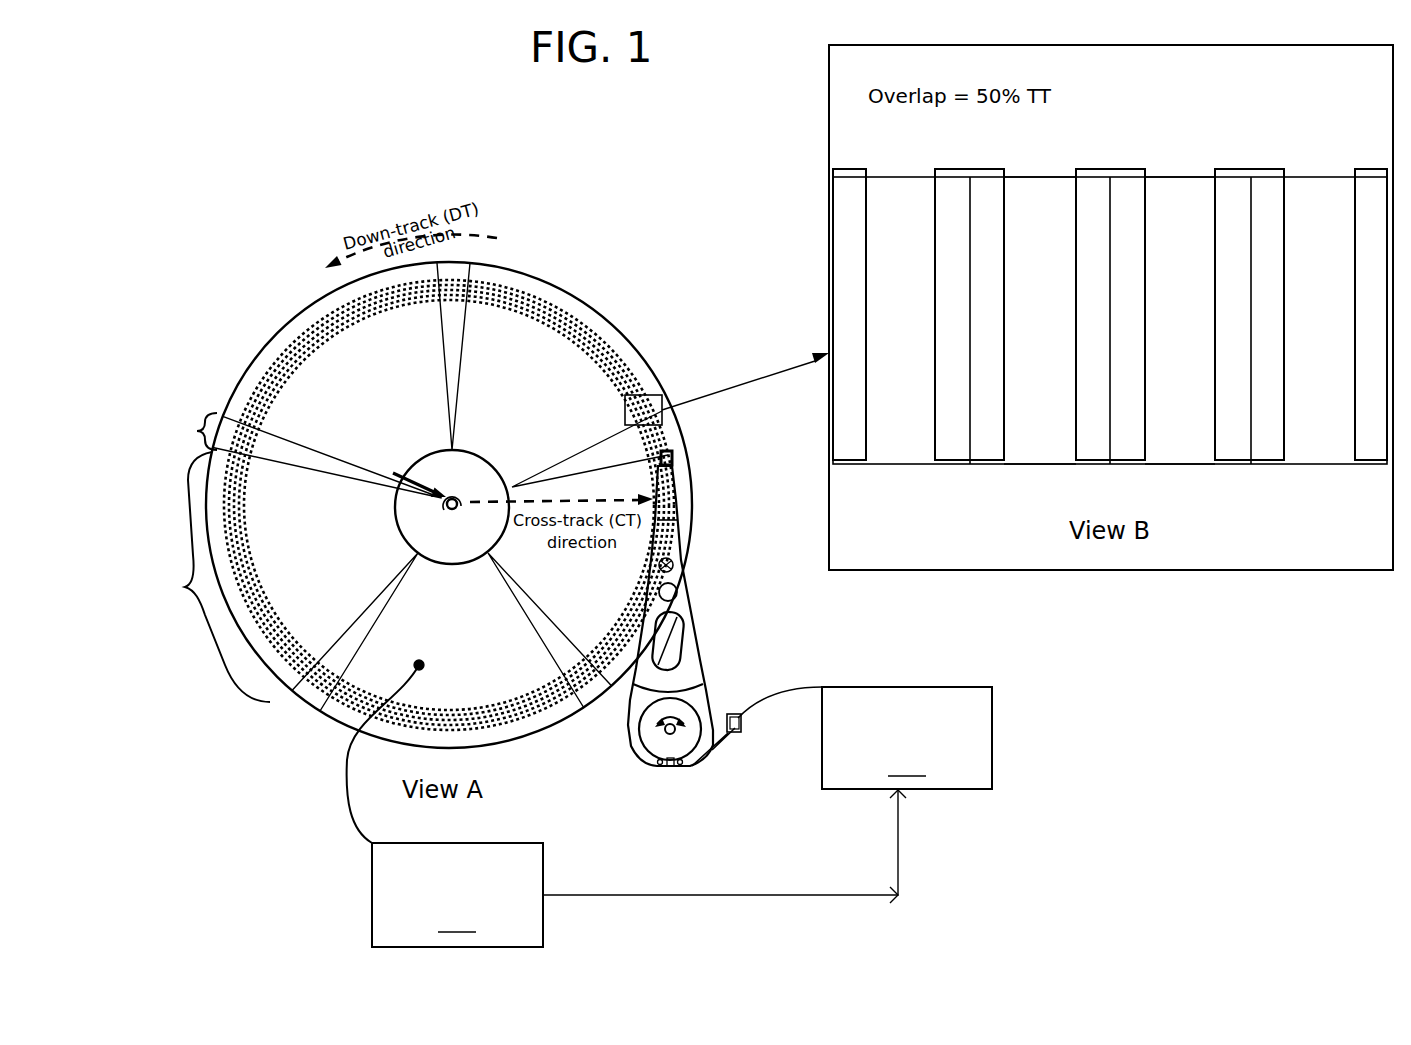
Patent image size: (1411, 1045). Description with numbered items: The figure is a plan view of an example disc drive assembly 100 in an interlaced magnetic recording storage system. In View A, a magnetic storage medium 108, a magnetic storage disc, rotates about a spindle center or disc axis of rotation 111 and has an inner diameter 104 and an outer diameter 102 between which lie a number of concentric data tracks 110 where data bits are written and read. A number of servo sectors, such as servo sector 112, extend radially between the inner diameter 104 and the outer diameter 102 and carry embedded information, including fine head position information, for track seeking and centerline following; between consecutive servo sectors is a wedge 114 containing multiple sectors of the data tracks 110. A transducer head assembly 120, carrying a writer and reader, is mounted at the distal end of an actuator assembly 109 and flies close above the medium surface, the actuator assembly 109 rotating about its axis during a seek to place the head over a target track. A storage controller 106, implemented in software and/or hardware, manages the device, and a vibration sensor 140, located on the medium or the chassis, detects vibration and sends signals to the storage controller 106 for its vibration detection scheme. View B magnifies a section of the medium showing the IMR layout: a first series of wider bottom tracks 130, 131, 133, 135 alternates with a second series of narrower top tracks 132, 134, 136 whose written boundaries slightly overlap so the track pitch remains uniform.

The disc drive assembly 100 is at (377, 132).
The outer diameter 102 is at (303, 310).
The inner diameter 104 is at (395, 513).
The storage controller 106 is at (907, 738).
The magnetic storage medium 108 is at (332, 726).
The actuator assembly 109 is at (690, 603).
The concentric data tracks 110 is at (586, 333).
The disc axis of rotation 111 is at (400, 478).
The servo sector 112 is at (183, 431).
The wedge 114 is at (668, 730).
The transducer head assembly 120 is at (672, 460).
The data track 130 is at (876, 314).
The data track 131 is at (1040, 320).
The data track 132 is at (969, 316).
The data track 133 is at (1180, 320).
The data track 134 is at (1110, 316).
The data track 135 is at (1344, 314).
The data track 136 is at (1249, 316).
The vibration sensor 140 is at (445, 803).